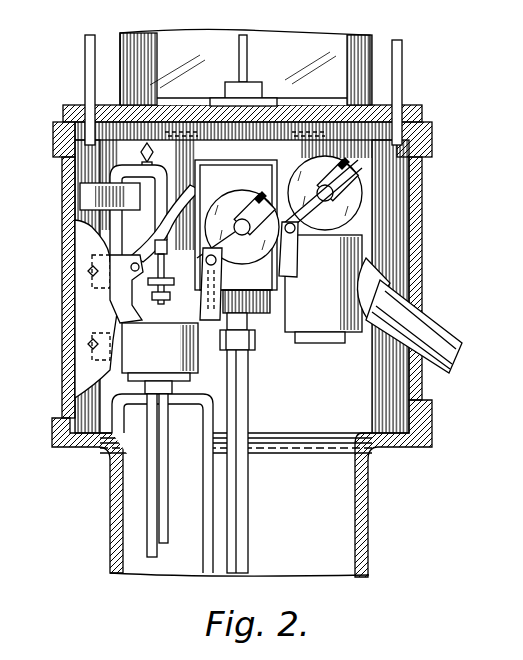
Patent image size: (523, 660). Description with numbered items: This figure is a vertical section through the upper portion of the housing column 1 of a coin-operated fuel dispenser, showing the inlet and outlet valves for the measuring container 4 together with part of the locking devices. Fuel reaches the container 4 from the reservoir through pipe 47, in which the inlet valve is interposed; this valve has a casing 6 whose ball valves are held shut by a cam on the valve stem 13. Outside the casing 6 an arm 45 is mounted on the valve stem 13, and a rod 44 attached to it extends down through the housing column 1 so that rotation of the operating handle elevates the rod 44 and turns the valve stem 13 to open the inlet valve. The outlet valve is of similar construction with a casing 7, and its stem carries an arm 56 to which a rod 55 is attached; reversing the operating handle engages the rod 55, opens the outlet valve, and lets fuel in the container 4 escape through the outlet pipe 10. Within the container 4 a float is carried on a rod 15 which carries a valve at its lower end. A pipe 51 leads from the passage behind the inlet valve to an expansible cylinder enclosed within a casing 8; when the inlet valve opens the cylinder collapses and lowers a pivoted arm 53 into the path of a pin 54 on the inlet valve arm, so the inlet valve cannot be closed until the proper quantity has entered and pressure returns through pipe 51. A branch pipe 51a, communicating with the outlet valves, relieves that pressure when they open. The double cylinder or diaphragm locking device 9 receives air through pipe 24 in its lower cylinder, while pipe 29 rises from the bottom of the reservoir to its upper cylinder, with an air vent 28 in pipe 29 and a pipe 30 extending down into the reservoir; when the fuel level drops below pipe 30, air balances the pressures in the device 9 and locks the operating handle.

The housing column 1 is at (432, 432).
The measuring container 4 is at (372, 42).
The valve casing 6 is at (240, 279).
The valve casing 7 is at (323, 289).
The casing 8 is at (160, 358).
The double cylinder or diaphragm locking device 9 is at (90, 228).
The outlet pipe 10 is at (440, 337).
The valve stem 13 is at (333, 193).
The rod 15 is at (249, 56).
The pipe 24 is at (203, 566).
The air vent 28 is at (63, 114).
The pipe 29 is at (152, 562).
The pipe 30 is at (172, 483).
The rod 44 is at (235, 322).
The arm 45 is at (233, 198).
The pipe 47 is at (240, 530).
The pipe 51 is at (197, 150).
The pipe 51a is at (290, 150).
The pivoted arm 53 is at (165, 208).
The pin 54 is at (140, 297).
The rod 55 is at (292, 252).
The arm 56 is at (340, 213).